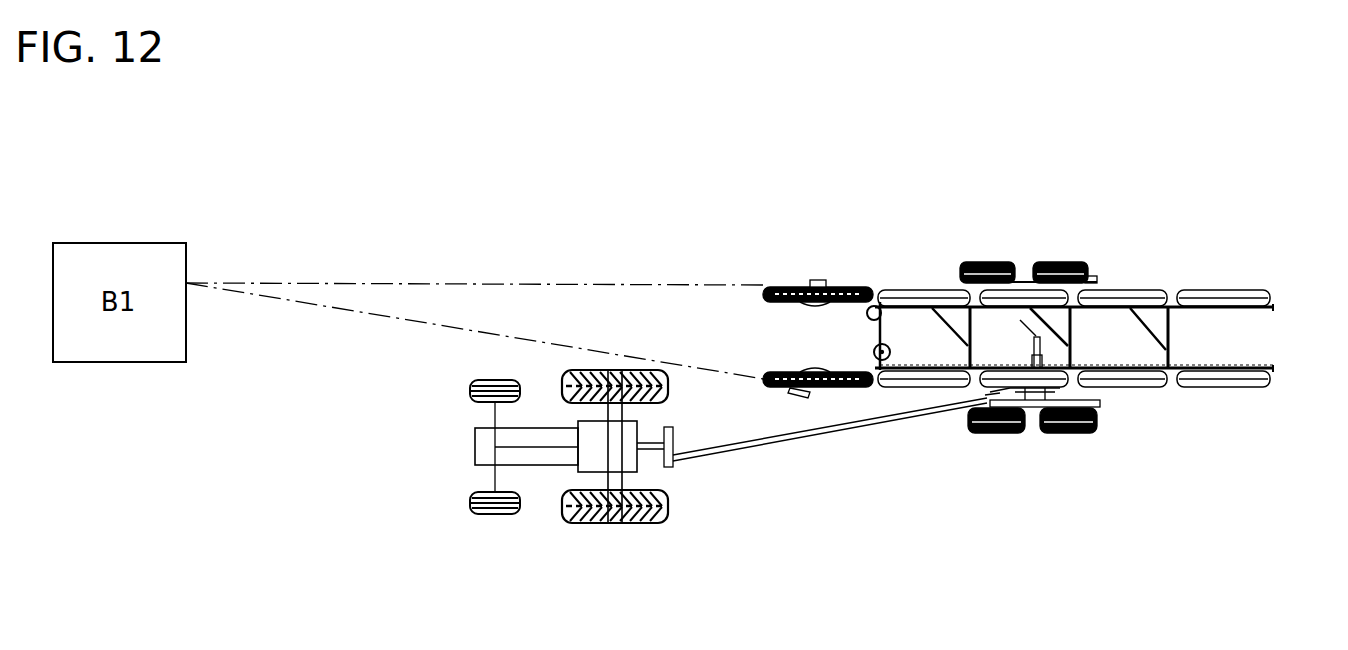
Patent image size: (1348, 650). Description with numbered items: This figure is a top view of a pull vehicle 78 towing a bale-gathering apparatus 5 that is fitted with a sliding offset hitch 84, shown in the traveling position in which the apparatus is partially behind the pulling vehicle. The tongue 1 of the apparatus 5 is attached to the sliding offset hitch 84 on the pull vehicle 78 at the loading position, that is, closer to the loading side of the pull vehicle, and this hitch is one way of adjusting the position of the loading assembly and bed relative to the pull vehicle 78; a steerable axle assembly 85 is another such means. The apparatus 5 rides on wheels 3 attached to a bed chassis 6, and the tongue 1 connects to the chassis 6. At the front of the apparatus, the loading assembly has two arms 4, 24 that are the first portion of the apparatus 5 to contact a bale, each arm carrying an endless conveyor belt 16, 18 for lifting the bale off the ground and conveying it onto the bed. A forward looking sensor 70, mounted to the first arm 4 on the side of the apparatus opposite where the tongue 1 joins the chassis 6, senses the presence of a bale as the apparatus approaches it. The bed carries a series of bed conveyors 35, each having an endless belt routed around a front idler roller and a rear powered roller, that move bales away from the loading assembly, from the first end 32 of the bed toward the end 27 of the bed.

The tongue 1 is at (797, 443).
The wheels 3 is at (1048, 262).
The first arm 4 is at (782, 302).
The apparatus 5 is at (1082, 190).
The bed chassis 6 is at (905, 308).
The endless conveyor belt 16 is at (765, 294).
The endless conveyor belt 18 is at (765, 380).
The second arm 24 is at (780, 372).
The end of the bed 27 is at (1273, 377).
The first end 32 is at (873, 352).
The bed conveyors 35 is at (896, 290).
The sensor 70 is at (820, 280).
The pull vehicle 78 is at (641, 568).
The sliding offset hitch 84 is at (673, 463).
The steerable axle assembly 85 is at (1043, 500).